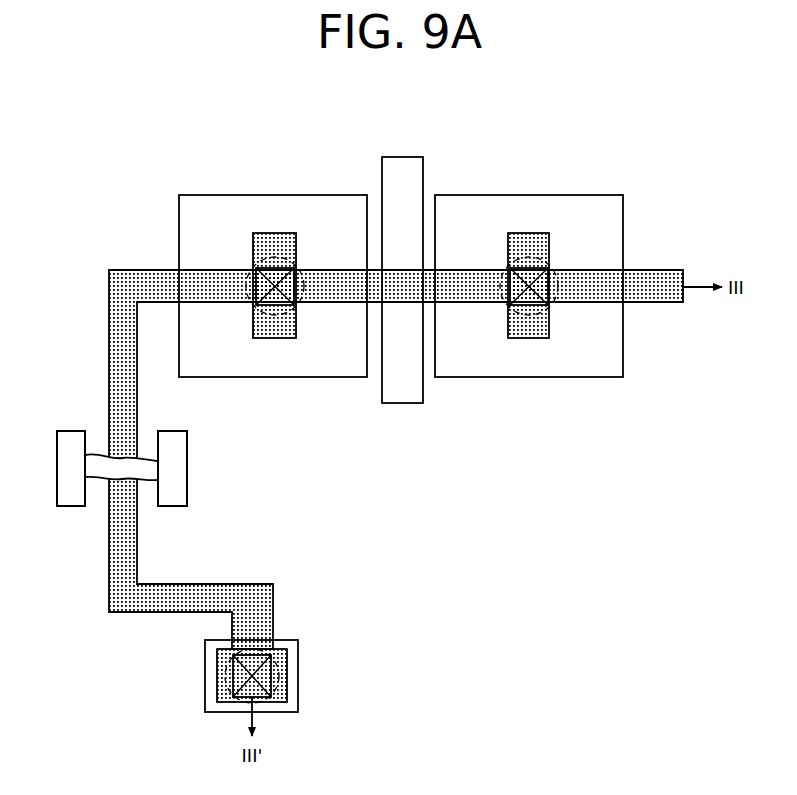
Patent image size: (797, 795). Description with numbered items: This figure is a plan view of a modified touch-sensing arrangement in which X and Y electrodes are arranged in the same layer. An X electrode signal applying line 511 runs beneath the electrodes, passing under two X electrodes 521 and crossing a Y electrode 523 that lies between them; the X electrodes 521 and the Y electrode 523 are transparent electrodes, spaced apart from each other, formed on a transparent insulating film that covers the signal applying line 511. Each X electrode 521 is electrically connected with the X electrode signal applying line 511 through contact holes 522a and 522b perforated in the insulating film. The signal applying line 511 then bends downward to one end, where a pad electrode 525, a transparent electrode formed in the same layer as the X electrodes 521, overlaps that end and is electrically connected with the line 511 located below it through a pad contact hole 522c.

The X electrode signal applying line 511 is at (118, 318).
The X electrode 521 is at (188, 206).
The contact hole 522a is at (277, 310).
The contact hole 522b is at (530, 310).
The pad contact hole 522c is at (225, 688).
The Y electrode 523 is at (415, 168).
The pad electrode 525 is at (295, 677).